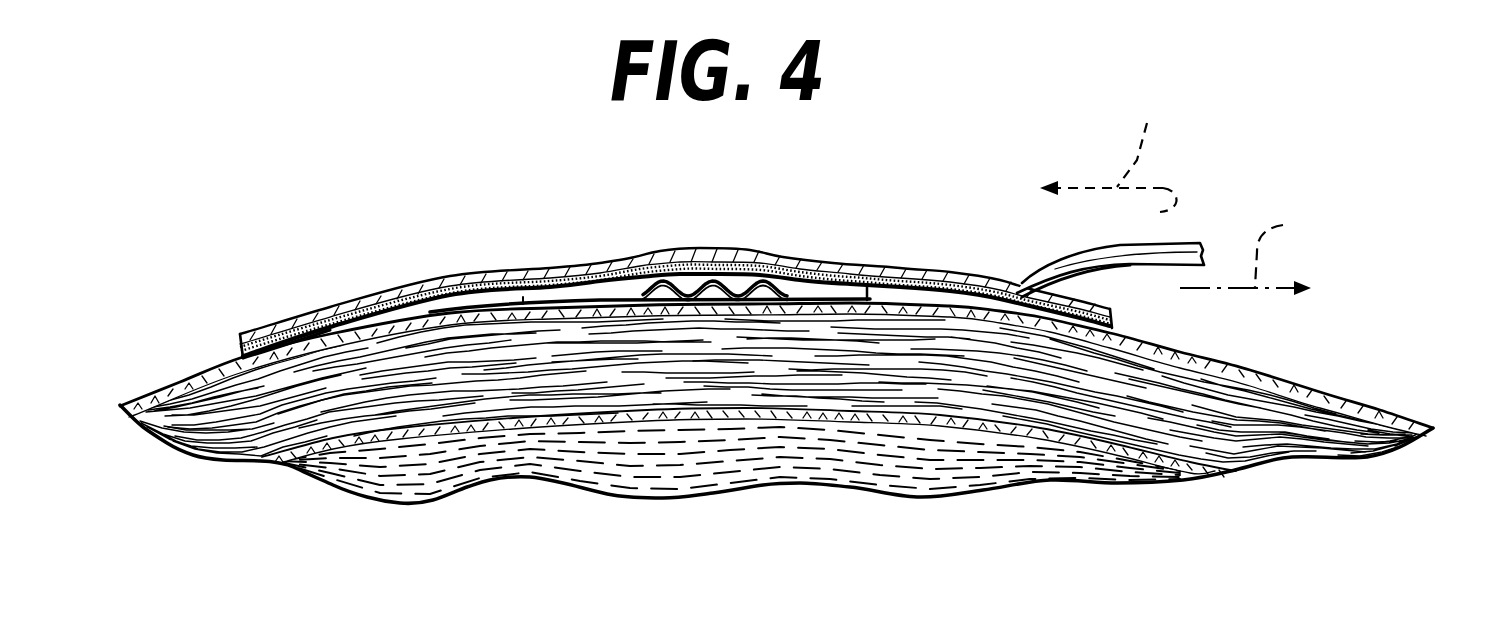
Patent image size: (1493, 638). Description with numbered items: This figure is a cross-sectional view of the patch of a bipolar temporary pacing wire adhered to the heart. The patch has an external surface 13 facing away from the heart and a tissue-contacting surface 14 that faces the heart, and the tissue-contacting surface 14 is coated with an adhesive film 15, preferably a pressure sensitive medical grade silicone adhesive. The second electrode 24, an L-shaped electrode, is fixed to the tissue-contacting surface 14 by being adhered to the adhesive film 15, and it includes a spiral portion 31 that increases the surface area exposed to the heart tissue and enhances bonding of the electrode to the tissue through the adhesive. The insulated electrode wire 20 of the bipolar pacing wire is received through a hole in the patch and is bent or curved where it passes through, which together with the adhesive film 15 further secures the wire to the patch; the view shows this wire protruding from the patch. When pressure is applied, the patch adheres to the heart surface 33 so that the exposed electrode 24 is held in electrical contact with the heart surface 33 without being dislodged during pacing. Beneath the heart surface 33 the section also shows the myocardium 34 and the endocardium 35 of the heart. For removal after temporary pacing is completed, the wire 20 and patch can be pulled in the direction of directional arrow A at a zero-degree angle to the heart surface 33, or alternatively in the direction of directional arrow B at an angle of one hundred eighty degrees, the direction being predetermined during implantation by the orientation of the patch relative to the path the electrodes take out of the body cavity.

The external surface 13 is at (313, 310).
The tissue-contacting surface 14 is at (272, 338).
The adhesive film 15 is at (812, 288).
The electrode wire 20 is at (1046, 268).
The second electrode 24 is at (545, 298).
The spiral portion 31 is at (712, 283).
The heart surface 33 is at (1384, 408).
The myocardium 34 is at (1273, 447).
The endocardium 35 is at (1120, 447).
The directional arrow A is at (1248, 250).
The directional arrow B is at (1108, 146).